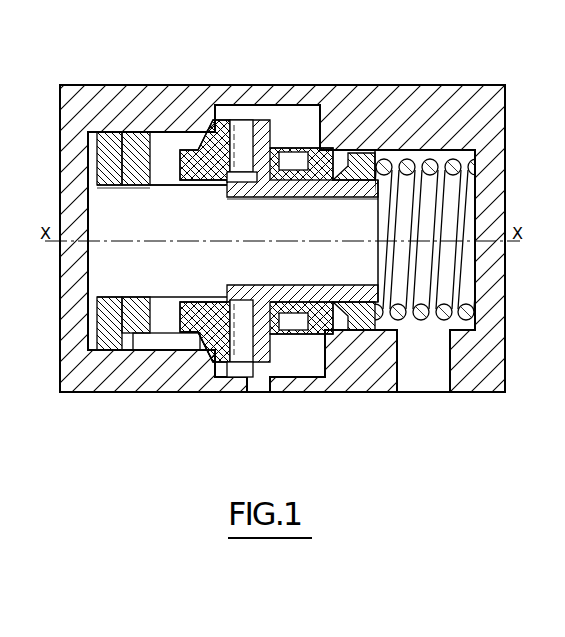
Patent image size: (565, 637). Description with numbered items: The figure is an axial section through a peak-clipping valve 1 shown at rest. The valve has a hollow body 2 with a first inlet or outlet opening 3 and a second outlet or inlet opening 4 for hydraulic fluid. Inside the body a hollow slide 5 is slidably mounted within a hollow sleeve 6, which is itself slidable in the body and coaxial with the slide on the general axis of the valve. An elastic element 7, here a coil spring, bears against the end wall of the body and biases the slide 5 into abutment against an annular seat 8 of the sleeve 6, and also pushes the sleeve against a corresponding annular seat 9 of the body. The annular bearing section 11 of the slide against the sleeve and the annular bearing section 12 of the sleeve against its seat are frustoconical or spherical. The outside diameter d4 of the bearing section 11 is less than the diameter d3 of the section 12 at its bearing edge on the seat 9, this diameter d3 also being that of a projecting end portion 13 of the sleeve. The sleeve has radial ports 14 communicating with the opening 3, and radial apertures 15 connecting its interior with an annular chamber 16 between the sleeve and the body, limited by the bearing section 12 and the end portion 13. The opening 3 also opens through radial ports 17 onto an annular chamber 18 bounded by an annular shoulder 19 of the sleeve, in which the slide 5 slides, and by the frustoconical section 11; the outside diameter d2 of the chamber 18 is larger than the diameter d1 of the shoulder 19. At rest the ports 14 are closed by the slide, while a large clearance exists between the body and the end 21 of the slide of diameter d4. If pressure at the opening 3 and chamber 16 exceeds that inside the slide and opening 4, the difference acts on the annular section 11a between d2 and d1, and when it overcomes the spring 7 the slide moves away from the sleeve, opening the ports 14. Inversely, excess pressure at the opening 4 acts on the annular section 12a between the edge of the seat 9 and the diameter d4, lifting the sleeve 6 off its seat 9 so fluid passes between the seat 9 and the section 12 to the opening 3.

The valve 1 is at (517, 138).
The hollow body 2 is at (102, 100).
The first inlet or outlet opening 3 is at (272, 393).
The second outlet or inlet opening 4 is at (436, 380).
The hollow slide 5 is at (382, 197).
The hollow sleeve 6 is at (201, 188).
The elastic element 7 is at (426, 268).
The annular seat 8 is at (325, 332).
The annular seat 9 is at (196, 392).
The annular bearing section 11 is at (343, 161).
The annular section 11a is at (301, 300).
The annular bearing section 12 is at (226, 118).
The annular section 12a is at (195, 340).
The projecting end portion 13 is at (124, 338).
The radial ports 14 is at (243, 352).
The radial apertures 15 is at (165, 183).
The annular chamber 16 is at (147, 134).
The radial ports 17 is at (296, 157).
The annular chamber 18 is at (288, 315).
The annular shoulder 19 is at (268, 120).
The end of the slide 21 is at (373, 152).
The diameter of the shoulder d1 is at (249, 221).
The outside diameter of the chamber d2 is at (289, 220).
The diameter of the annular section d3 is at (123, 217).
The outside diameter of the bearing section d4 is at (343, 220).